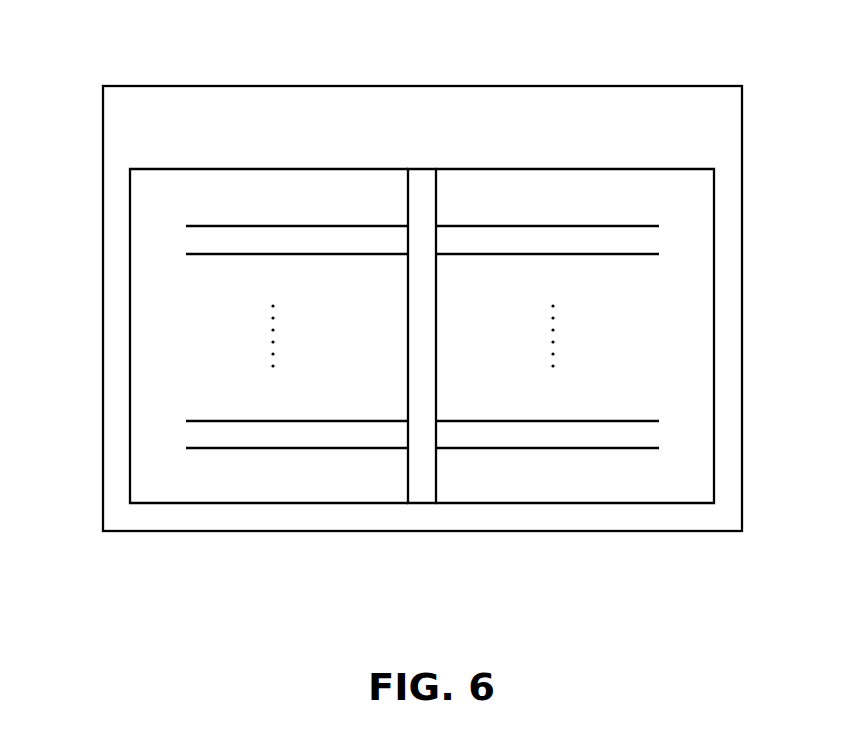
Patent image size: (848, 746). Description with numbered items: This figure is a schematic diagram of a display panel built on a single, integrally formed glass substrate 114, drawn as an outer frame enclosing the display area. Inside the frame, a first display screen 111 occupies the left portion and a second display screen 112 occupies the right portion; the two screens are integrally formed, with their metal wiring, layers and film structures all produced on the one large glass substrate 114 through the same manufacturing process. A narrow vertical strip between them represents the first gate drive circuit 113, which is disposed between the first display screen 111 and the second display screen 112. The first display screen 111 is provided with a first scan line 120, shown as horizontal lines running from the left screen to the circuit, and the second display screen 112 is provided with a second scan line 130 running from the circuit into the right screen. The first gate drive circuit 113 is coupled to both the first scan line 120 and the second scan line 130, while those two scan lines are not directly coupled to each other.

The glass substrate 114 is at (289, 128).
The first display screen 111 is at (158, 448).
The second display screen 112 is at (703, 448).
The first gate drive circuit 113 is at (420, 490).
The first scan line 120 is at (193, 253).
The second scan line 130 is at (650, 224).